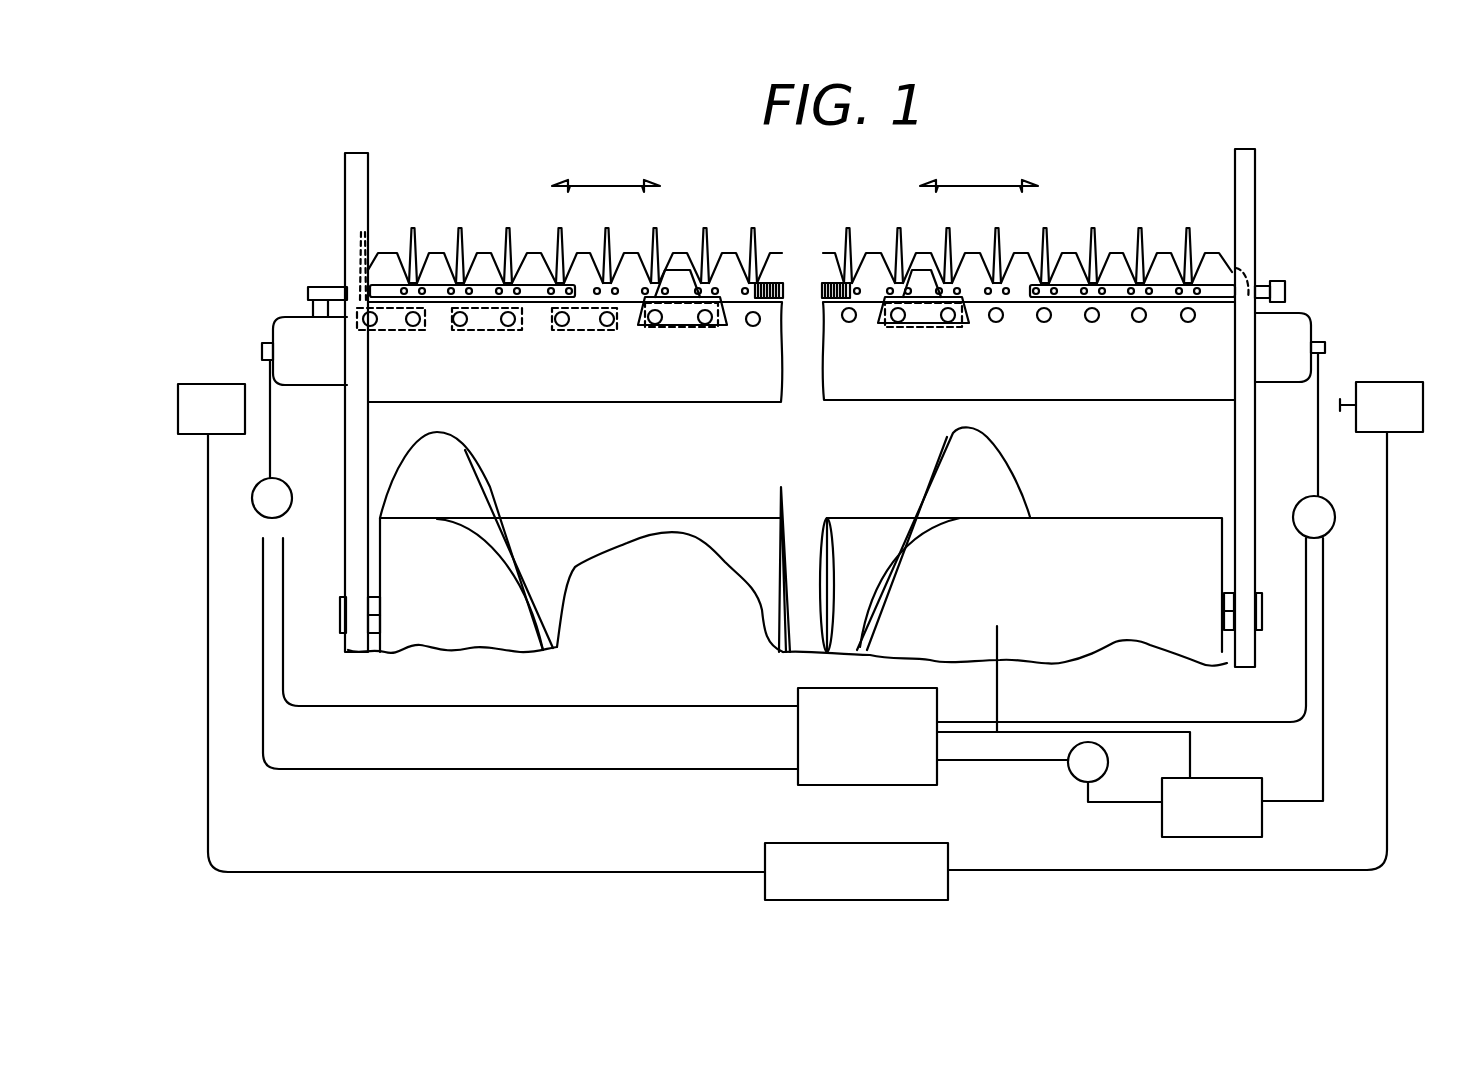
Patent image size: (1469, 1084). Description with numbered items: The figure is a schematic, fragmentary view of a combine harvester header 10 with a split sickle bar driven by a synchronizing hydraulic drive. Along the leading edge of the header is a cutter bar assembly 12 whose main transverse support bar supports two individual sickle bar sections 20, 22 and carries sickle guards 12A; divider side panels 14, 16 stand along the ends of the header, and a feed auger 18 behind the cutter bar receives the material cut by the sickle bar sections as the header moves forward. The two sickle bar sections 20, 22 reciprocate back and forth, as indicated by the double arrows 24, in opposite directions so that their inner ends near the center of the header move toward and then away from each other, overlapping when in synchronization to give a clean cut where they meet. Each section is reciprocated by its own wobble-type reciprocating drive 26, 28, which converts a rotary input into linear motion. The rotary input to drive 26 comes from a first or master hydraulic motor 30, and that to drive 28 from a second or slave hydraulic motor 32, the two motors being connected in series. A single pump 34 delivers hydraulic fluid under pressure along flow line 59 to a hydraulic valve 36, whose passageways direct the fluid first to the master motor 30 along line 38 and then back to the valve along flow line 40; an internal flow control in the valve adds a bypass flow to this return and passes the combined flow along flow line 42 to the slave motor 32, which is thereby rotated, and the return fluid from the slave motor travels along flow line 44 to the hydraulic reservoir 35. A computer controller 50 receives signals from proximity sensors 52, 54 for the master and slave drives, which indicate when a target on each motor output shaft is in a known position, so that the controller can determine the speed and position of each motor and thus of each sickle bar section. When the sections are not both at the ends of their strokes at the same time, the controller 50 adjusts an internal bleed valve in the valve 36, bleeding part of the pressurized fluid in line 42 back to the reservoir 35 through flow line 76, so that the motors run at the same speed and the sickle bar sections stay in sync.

The harvester header 10 is at (802, 424).
The cutter bar assembly 12 is at (772, 283).
The sickle guards 12A is at (560, 232).
The divider side panel 14 is at (348, 460).
The divider side panel 16 is at (1243, 433).
The feed auger 18 is at (943, 492).
The sickle bar section 20 is at (583, 294).
The sickle bar section 22 is at (1015, 296).
The double arrows 24 is at (980, 186).
The reciprocating drive 26 is at (293, 327).
The reciprocating drive 28 is at (1290, 328).
The master hydraulic motor 30 is at (252, 498).
The slave hydraulic motor 32 is at (1335, 515).
The pump 34 is at (1085, 782).
The hydraulic reservoir 35 is at (1200, 837).
The hydraulic valve 36 is at (893, 785).
The line 38 is at (418, 771).
The flow line 40 is at (652, 706).
The flow line 42 is at (1070, 720).
The flow line 44 is at (1325, 655).
The computer controller 50 is at (765, 890).
The proximity sensor 52 is at (195, 383).
The proximity sensor 54 is at (1405, 382).
The flow line 59 is at (1010, 762).
The flow line 76 is at (1063, 685).